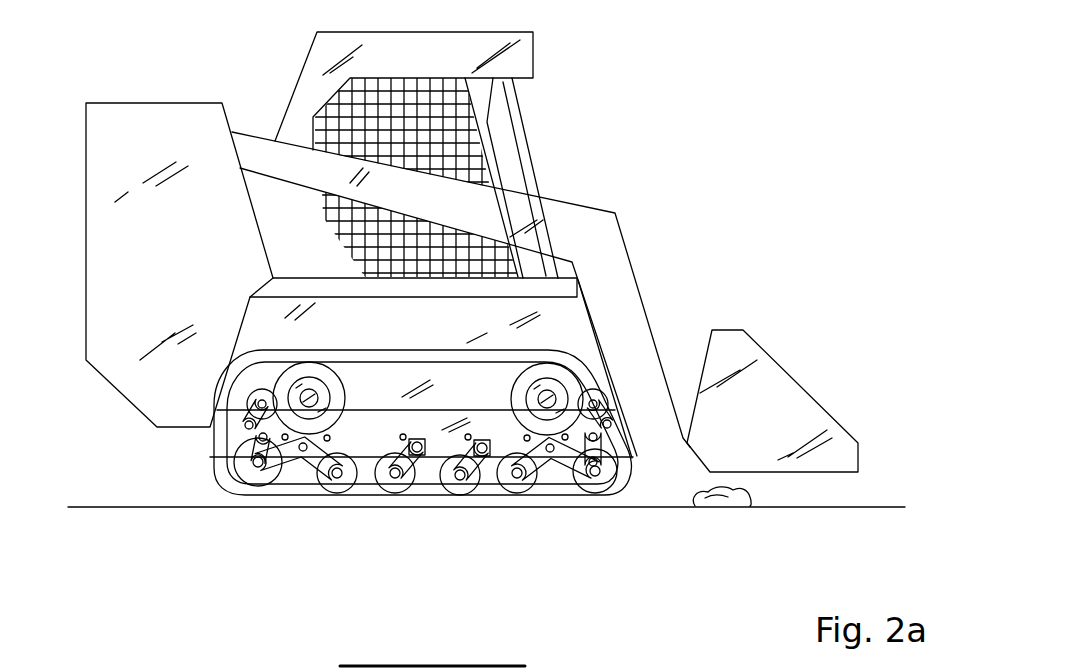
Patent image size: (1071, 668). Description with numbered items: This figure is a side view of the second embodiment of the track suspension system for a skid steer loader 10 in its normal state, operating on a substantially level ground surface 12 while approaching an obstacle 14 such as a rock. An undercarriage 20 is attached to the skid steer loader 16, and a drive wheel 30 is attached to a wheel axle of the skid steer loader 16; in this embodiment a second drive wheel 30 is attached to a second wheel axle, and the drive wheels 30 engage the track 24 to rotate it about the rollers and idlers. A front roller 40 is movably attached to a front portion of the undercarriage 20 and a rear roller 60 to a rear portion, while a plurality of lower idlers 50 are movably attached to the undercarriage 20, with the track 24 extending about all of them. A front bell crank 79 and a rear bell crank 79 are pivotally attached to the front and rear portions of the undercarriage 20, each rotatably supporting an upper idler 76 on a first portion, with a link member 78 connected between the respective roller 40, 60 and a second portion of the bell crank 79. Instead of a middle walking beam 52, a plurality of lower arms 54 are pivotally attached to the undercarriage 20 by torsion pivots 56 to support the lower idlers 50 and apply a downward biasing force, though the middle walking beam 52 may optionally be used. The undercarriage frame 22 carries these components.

The track suspension system for a skid steer loader 10 is at (656, 181).
The ground surface 12 is at (107, 507).
The obstacle 14 is at (745, 498).
The skid steer loader 16 is at (284, 98).
The undercarriage 20 is at (502, 474).
The undercarriage frame 22 is at (388, 447).
The track 24 is at (477, 352).
The drive wheel 30 is at (280, 378).
The front roller 40 is at (590, 478).
The lower idlers 50 is at (340, 480).
The middle walking beam 52 is at (290, 465).
The lower arms 54 is at (445, 480).
The torsion pivot 56 is at (425, 440).
The rear roller 60 is at (296, 480).
The upper idler 76 is at (247, 420).
The link member 78 is at (228, 455).
The bell crank 79 is at (245, 437).